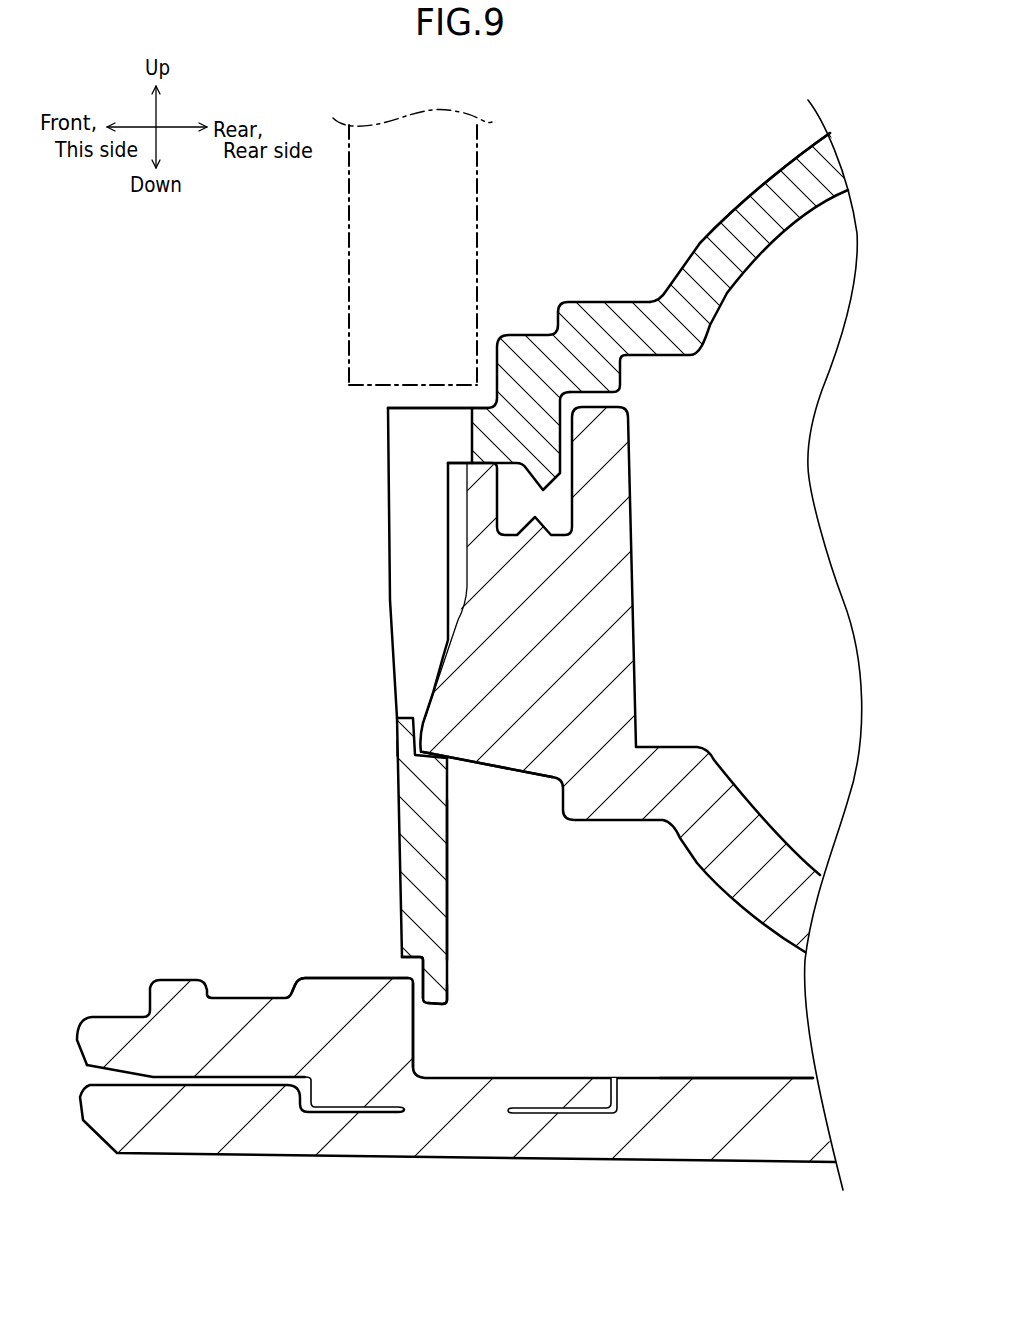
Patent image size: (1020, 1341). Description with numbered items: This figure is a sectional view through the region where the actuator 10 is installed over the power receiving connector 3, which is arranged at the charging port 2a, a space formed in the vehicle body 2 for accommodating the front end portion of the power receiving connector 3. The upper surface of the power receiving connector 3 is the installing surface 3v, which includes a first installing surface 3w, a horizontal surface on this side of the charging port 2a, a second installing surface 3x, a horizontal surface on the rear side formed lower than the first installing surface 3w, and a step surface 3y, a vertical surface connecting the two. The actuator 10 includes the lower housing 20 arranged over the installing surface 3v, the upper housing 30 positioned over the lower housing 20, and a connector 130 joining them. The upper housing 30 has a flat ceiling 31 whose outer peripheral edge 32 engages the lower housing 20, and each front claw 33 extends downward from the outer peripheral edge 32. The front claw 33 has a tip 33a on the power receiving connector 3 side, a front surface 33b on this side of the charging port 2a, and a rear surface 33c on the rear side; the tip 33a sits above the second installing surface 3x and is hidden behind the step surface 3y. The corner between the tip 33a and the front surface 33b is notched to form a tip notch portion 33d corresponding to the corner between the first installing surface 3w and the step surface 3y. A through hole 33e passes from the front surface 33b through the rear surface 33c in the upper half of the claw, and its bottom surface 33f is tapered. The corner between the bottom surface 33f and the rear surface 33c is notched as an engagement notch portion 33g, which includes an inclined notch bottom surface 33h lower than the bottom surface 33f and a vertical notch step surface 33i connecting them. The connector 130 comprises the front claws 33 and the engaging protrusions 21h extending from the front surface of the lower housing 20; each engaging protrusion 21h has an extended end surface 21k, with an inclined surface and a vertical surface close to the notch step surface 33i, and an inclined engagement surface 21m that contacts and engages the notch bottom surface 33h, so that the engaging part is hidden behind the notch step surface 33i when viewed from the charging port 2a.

The vehicle body 2 is at (348, 294).
The charging port 2a is at (370, 405).
The power receiving connector 3 is at (677, 1167).
The installing surface 3v is at (708, 1075).
The first installing surface 3w is at (317, 978).
The second installing surface 3x is at (633, 1078).
The step surface 3y is at (424, 993).
The actuator 10 is at (654, 236).
The lower housing 20 is at (510, 680).
The engaging protrusion 21h is at (517, 780).
The extended end surface 21k is at (397, 747).
The engagement surface 21m is at (431, 763).
The upper housing 30 is at (748, 283).
The ceiling 31 is at (786, 178).
The outer peripheral edge 32 is at (628, 313).
The front claw 33 is at (555, 568).
The tip 33a is at (444, 1003).
The front surface 33b is at (398, 853).
The rear surface 33c is at (447, 892).
The tip notch portion 33d is at (402, 968).
The through hole 33e is at (411, 531).
The bottom surface 33f is at (412, 716).
The engagement notch portion 33g is at (713, 622).
The notch bottom surface 33h is at (427, 752).
The notch step surface 33i is at (422, 722).
The connector 130 is at (517, 790).